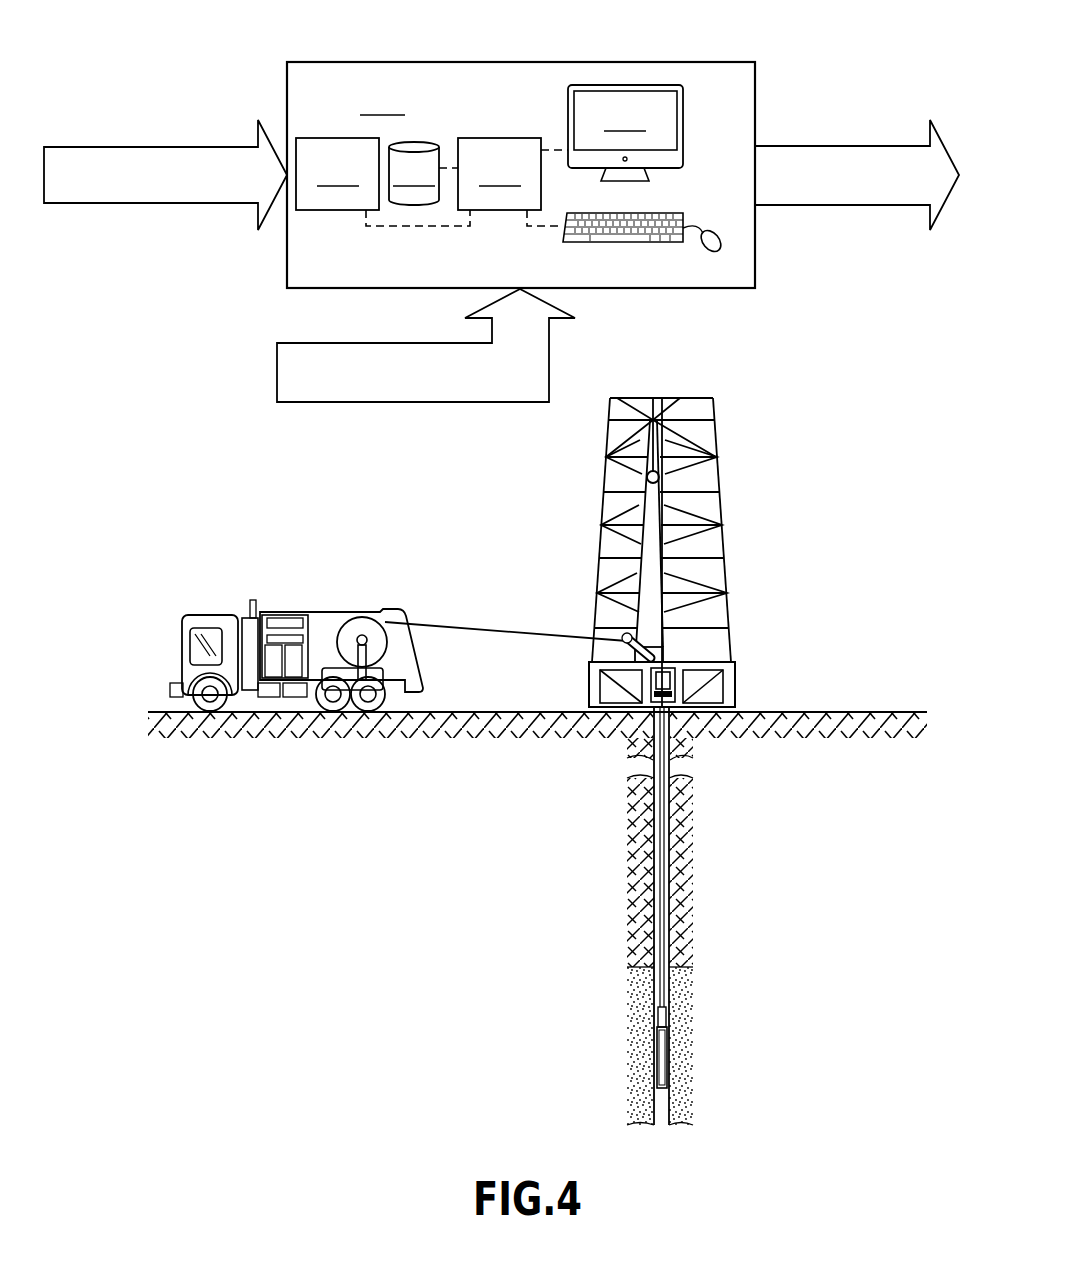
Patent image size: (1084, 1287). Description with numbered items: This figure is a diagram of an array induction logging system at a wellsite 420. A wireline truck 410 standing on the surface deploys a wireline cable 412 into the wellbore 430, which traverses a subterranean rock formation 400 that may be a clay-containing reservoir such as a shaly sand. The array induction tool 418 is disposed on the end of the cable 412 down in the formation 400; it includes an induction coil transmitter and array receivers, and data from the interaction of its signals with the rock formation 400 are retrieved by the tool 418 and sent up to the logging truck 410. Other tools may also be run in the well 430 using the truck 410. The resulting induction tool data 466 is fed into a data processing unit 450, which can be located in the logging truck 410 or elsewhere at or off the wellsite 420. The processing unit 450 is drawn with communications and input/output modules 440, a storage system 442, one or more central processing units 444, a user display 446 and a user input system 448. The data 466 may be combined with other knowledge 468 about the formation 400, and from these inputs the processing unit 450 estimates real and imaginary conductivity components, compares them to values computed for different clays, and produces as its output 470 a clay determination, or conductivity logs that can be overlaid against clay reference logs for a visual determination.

The formation 400 is at (728, 1039).
The wireline truck 410 is at (335, 609).
The wireline cable 412 is at (503, 633).
The array induction tool 418 is at (655, 1053).
The wellsite 420 is at (783, 651).
The wellbore 430 is at (650, 823).
The communications and input/output modules 440 is at (337, 174).
The storage system 442 is at (414, 173).
The central processing units 444 is at (499, 174).
The user display 446 is at (625, 133).
The user input system 448 is at (680, 193).
The data processing unit 450 is at (647, 62).
The induction tool data 466 is at (342, 403).
The other knowledge 468 is at (147, 147).
The output 470 is at (840, 146).